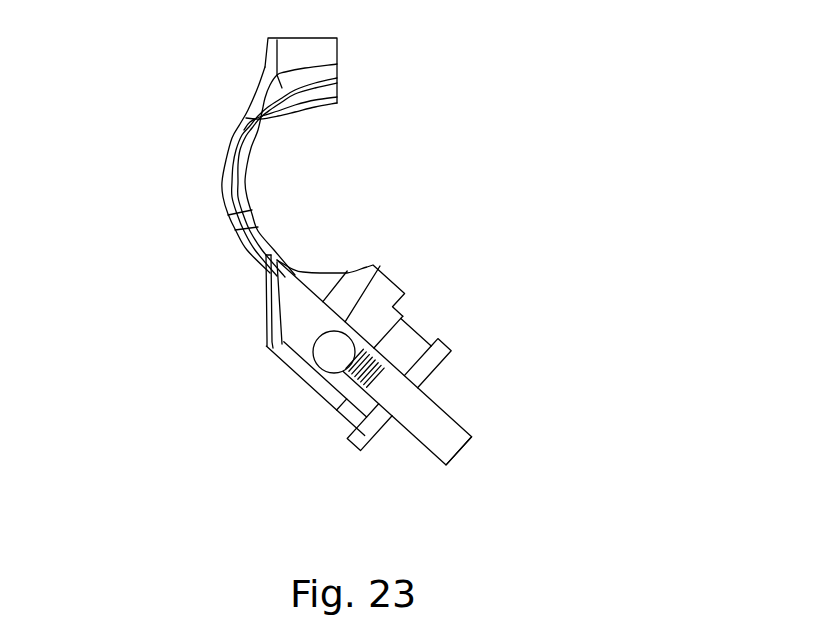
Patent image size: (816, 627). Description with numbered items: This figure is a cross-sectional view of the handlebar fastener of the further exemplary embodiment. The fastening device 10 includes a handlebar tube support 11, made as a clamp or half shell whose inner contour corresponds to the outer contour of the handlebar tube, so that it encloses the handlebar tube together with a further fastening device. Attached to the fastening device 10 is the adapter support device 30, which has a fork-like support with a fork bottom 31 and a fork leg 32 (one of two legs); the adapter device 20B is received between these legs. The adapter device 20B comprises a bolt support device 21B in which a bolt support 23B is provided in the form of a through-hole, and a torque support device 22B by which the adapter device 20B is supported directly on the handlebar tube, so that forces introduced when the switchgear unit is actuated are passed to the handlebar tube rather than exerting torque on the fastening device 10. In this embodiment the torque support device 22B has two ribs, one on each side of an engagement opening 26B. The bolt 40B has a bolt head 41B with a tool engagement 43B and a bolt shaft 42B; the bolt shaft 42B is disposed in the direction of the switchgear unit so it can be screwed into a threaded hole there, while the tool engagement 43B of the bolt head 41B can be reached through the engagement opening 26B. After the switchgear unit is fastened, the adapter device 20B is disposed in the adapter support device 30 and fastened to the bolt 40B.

The fastening device 10 is at (310, 50).
The handlebar tube support 11 is at (257, 128).
The fork bottom 31 is at (240, 231).
The adapter support device 30 is at (260, 262).
The fork leg 32 is at (260, 300).
The adapter device 20B is at (330, 400).
The bolt support device 21B is at (318, 369).
The torque support device 22B is at (335, 273).
The engagement opening 26B is at (293, 290).
The bolt support 23B is at (334, 353).
The bolt 40B is at (455, 443).
The bolt head 41B is at (402, 317).
The bolt shaft 42B is at (433, 430).
The tool engagement 43B is at (371, 345).